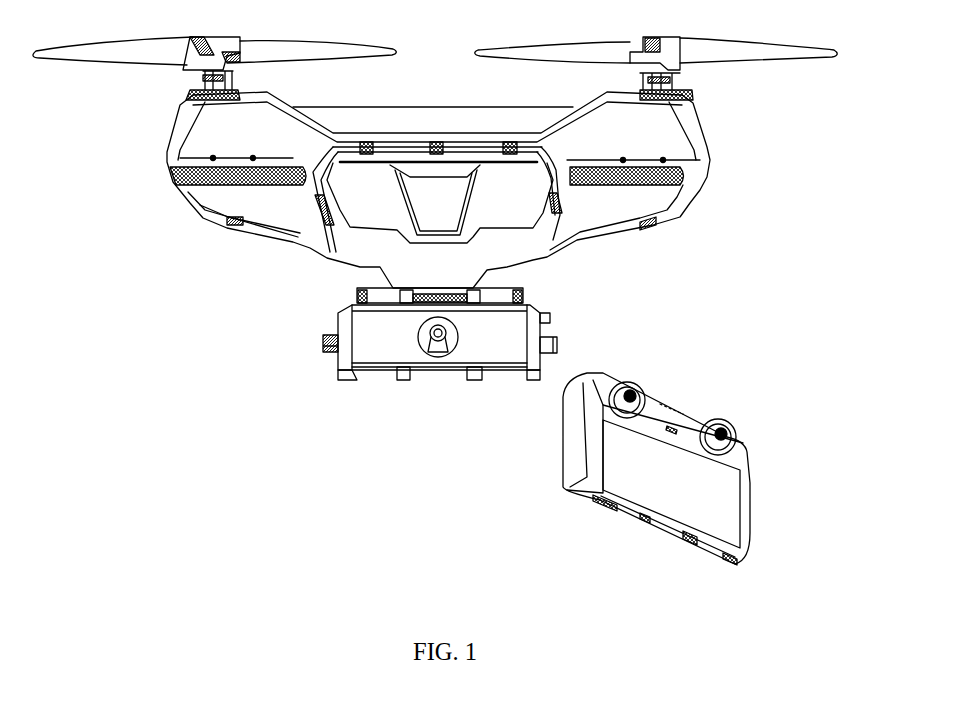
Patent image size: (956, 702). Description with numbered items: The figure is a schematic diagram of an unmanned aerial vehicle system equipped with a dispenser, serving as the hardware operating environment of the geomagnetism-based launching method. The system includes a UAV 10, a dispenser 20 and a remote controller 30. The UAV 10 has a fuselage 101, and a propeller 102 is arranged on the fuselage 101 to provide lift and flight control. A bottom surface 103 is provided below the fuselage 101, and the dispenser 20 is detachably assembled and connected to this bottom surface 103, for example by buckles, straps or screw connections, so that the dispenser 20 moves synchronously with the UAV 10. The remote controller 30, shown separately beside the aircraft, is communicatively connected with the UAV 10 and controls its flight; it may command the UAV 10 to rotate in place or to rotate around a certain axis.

The UAV 10 is at (435, 179).
The fuselage 101 is at (373, 220).
The propeller 102 is at (715, 52).
The bottom surface 103 is at (440, 290).
The dispenser 20 is at (487, 375).
The remote controller 30 is at (660, 424).